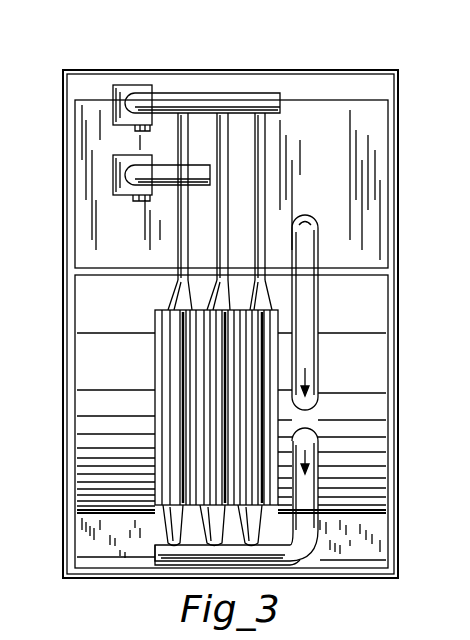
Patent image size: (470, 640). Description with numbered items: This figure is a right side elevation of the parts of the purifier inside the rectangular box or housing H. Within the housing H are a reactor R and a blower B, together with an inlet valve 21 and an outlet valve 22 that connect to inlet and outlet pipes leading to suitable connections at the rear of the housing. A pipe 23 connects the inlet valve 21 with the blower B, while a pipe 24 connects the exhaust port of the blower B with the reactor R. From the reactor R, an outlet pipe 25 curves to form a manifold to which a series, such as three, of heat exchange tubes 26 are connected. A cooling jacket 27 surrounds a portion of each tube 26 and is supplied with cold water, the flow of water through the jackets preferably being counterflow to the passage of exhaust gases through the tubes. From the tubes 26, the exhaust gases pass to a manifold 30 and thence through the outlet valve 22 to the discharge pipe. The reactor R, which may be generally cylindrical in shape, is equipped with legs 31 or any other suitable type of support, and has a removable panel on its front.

The housing H is at (334, 68).
The blower B is at (318, 135).
The reactor R is at (102, 307).
The inlet valve 21 is at (113, 182).
The outlet valve 22 is at (138, 124).
The pipe 23 is at (160, 190).
The pipe 24 is at (310, 240).
The outlet pipe 25 is at (318, 474).
The heat exchange tubes 26 is at (177, 227).
The cooling jacket 27 is at (175, 350).
The manifold 30 is at (205, 100).
The legs 31 is at (97, 520).